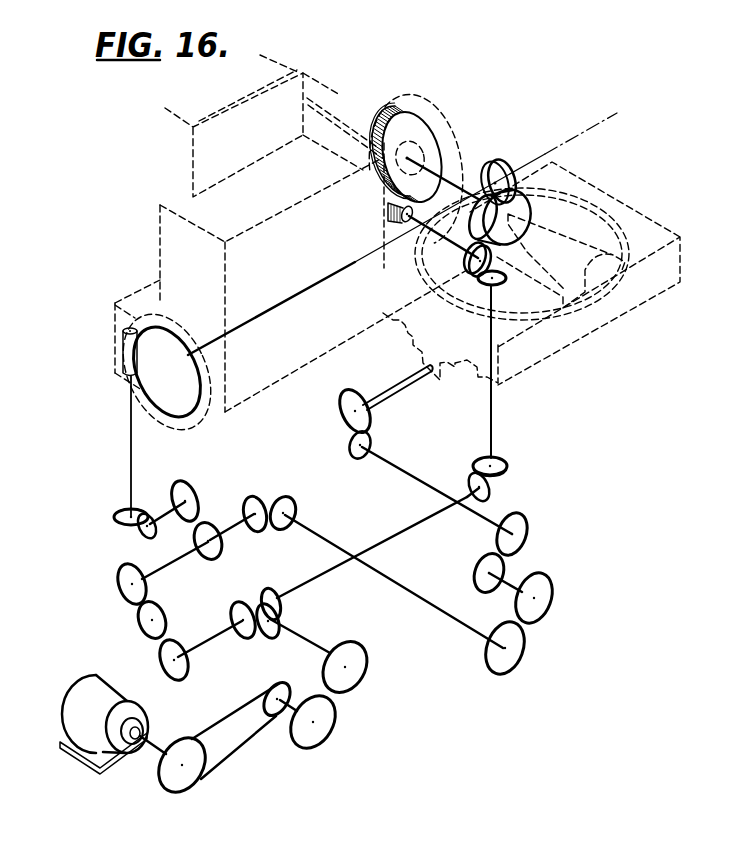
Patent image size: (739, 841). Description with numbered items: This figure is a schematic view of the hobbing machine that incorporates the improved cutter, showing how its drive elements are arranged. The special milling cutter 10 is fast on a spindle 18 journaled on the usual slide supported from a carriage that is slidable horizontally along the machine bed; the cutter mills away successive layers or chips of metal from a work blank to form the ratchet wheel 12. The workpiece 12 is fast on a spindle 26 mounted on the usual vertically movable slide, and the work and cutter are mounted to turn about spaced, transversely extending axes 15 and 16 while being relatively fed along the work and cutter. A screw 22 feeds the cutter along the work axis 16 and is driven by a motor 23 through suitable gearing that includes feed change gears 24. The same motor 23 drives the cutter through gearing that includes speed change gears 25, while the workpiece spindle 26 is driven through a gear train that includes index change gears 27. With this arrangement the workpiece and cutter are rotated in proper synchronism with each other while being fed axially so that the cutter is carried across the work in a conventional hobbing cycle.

The milling cutter 10 is at (467, 252).
The ratchet wheel 12 is at (503, 157).
The axis 15 is at (595, 128).
The work axis 16 is at (337, 113).
The spindle 18 is at (372, 256).
The screw 22 is at (403, 380).
The motor 23 is at (79, 690).
The feed change gears 24 is at (528, 630).
The speed change gears 25 is at (340, 702).
The spindle 26 is at (331, 280).
The index change gears 27 is at (137, 619).